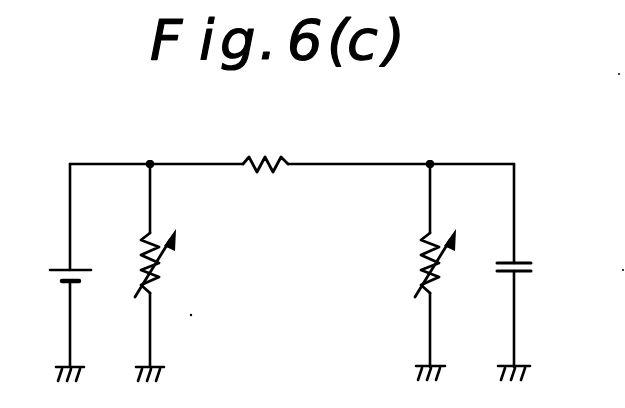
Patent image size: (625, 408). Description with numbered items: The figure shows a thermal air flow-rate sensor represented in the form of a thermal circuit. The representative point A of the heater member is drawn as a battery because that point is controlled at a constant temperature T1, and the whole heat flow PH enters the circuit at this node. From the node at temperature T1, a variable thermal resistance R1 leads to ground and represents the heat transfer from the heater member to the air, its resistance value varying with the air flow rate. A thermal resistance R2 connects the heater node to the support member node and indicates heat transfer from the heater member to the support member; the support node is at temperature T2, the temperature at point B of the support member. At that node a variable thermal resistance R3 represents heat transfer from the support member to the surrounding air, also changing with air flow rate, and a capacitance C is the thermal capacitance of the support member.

The whole heat flow PH is at (92, 140).
The constant temperature T1 is at (150, 159).
The temperature at point B of the support member T2 is at (430, 158).
The thermal resistance of the heater member R1 is at (161, 282).
The thermal resistance R2 is at (254, 158).
The thermal resistance R3 is at (420, 268).
The capacitance C is at (533, 271).